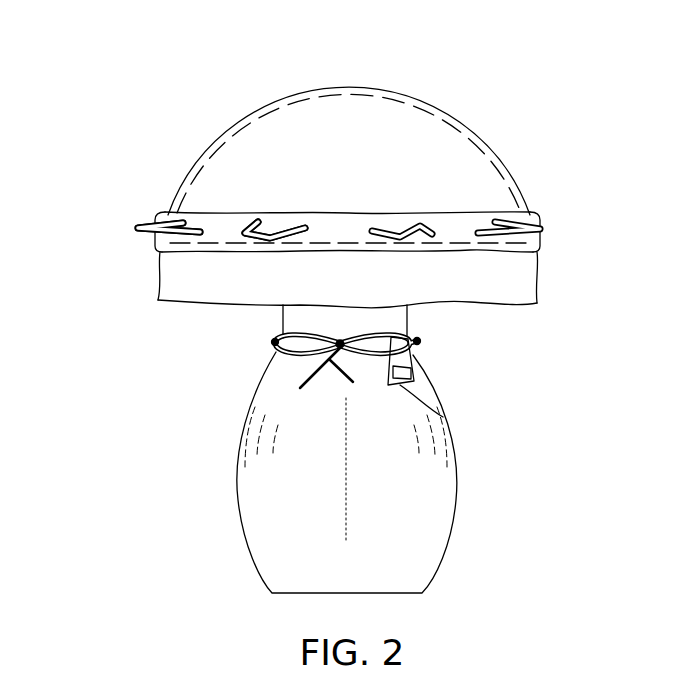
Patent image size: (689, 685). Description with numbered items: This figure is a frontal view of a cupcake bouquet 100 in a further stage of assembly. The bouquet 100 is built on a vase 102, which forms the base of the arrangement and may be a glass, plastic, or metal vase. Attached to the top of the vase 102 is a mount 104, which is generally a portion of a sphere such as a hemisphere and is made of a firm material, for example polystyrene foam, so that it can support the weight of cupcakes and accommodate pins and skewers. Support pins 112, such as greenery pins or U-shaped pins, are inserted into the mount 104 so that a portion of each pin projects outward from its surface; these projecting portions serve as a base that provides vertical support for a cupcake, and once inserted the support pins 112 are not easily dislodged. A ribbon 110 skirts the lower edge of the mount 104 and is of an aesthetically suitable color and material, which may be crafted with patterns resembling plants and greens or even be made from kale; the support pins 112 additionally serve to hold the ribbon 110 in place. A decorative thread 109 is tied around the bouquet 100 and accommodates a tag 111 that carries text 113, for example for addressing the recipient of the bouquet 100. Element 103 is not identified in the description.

The cupcake bouquet 100 is at (330, 315).
The vase 102 is at (456, 510).
The cover 103 is at (535, 293).
The mount 104 is at (480, 150).
The decorative thread 109 is at (419, 340).
The ribbon 110 is at (542, 245).
The tag 111 is at (443, 417).
The support pins 112 is at (267, 238).
The text 113 is at (413, 370).